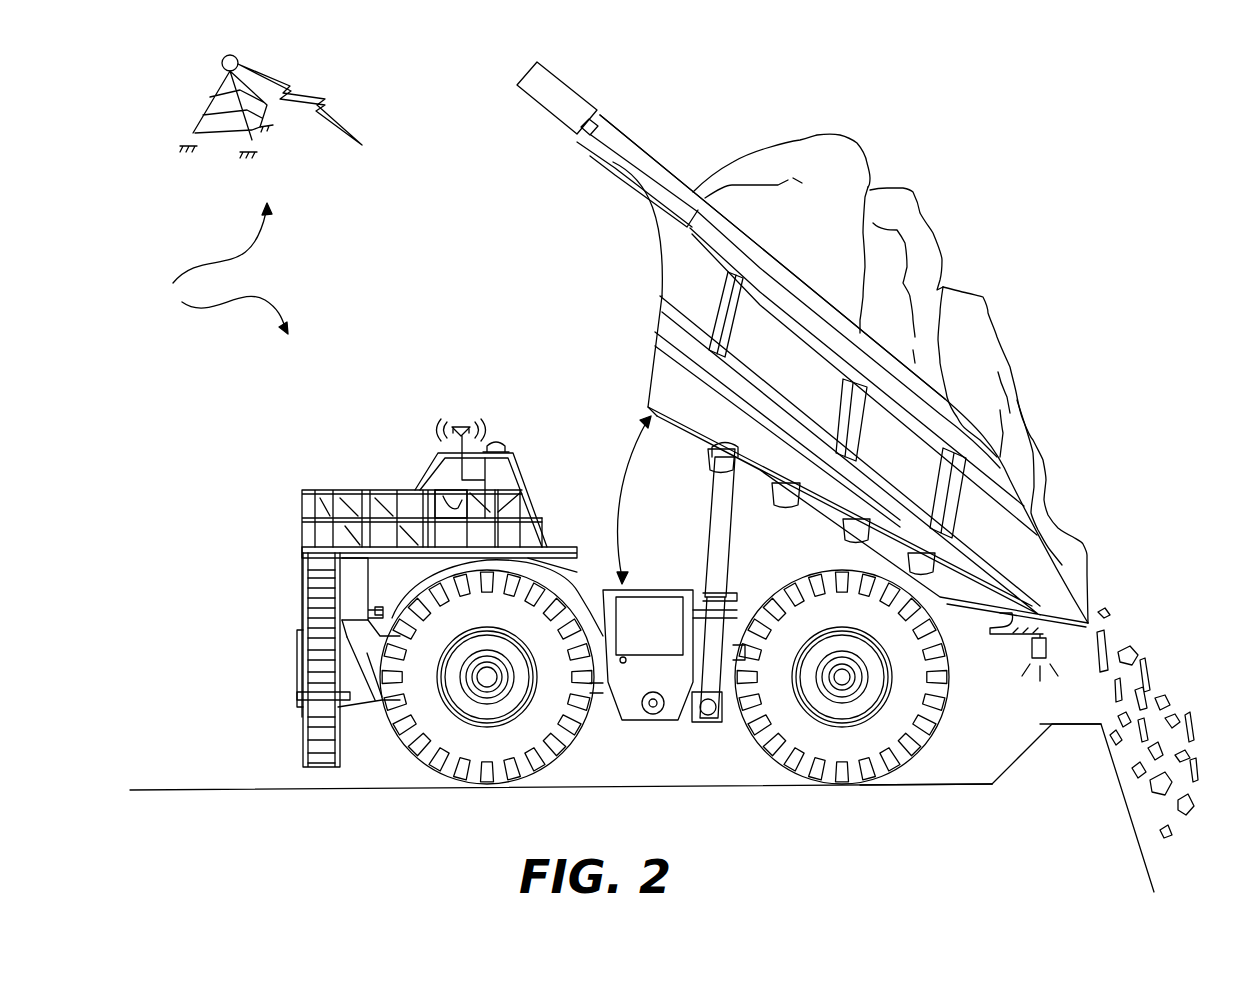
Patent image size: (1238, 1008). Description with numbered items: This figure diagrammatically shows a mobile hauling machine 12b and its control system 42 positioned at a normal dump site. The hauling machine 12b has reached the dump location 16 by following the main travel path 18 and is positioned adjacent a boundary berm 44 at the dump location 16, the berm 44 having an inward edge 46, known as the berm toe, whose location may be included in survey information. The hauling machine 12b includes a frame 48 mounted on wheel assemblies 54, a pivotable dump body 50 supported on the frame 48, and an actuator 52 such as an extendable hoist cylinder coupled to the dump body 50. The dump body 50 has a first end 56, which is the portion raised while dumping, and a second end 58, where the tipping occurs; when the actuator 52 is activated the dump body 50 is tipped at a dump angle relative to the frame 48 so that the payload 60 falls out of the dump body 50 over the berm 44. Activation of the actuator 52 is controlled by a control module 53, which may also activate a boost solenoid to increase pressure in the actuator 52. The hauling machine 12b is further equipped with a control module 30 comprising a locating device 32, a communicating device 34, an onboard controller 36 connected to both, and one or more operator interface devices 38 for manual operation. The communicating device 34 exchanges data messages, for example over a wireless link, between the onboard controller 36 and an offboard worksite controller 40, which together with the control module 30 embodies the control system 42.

The mobile hauling machine 12b is at (269, 645).
The dump location 16 is at (939, 841).
The main travel path 18 is at (235, 782).
The control module 30 is at (570, 366).
The locating device 32 is at (500, 443).
The communicating device 34 is at (461, 425).
The onboard controller 36 is at (492, 472).
The operator interface device 38 is at (440, 497).
The offboard worksite controller 40 is at (159, 113).
The control system 42 is at (217, 268).
The boundary berm 44 is at (1060, 771).
The inward edge of the berm 46 is at (993, 786).
The frame 48 is at (605, 690).
The dump body 50 is at (661, 228).
The actuator 52 is at (712, 498).
The control module (CM) 53 is at (649, 626).
The wheel assemblies 54 is at (822, 705).
The first end of the dump body 56 is at (520, 79).
The second end of the dump body 58 is at (1092, 648).
The payload 60 is at (1089, 548).